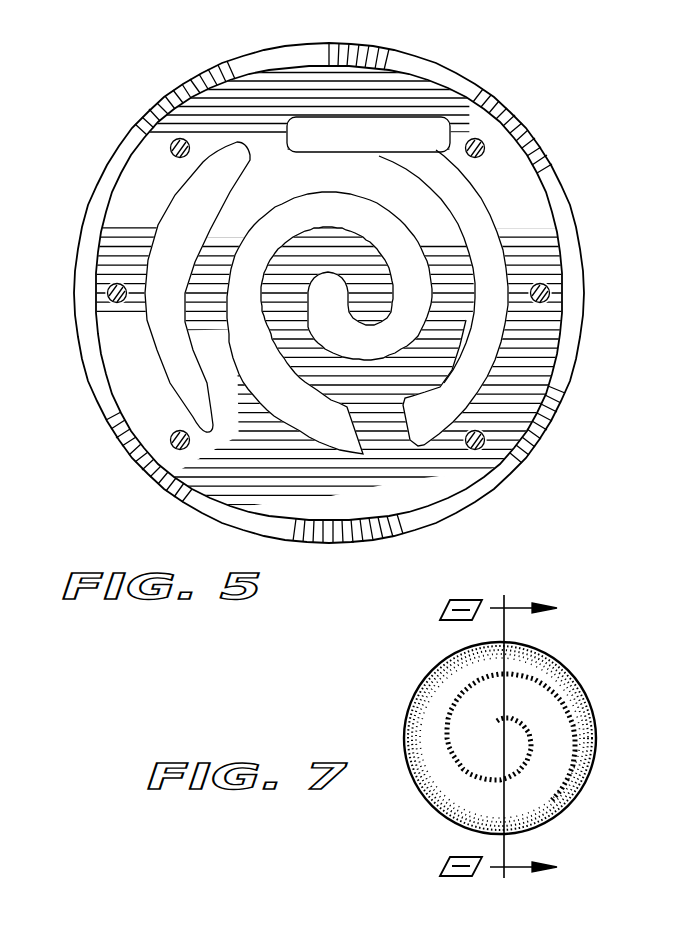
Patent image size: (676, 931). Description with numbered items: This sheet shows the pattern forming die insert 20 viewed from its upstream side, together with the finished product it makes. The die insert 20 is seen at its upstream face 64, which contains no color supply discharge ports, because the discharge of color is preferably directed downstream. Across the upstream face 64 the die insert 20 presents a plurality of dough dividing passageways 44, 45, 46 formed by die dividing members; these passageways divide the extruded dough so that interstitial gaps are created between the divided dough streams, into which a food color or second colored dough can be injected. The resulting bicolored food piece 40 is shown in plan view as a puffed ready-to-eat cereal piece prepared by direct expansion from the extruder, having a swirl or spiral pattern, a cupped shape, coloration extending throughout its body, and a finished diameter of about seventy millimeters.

In FIG. 5, the pattern forming die insert 20 is at (528, 144).
In FIG. 5, the upstream face 64 is at (440, 113).
In FIG. 5, the dough dividing passageway 44 is at (488, 240).
In FIG. 5, the dough dividing passageway 45 is at (170, 230).
In FIG. 5, the dough dividing passageway 46 is at (313, 436).
In FIG. 7, the bicolored food piece 40 is at (590, 792).